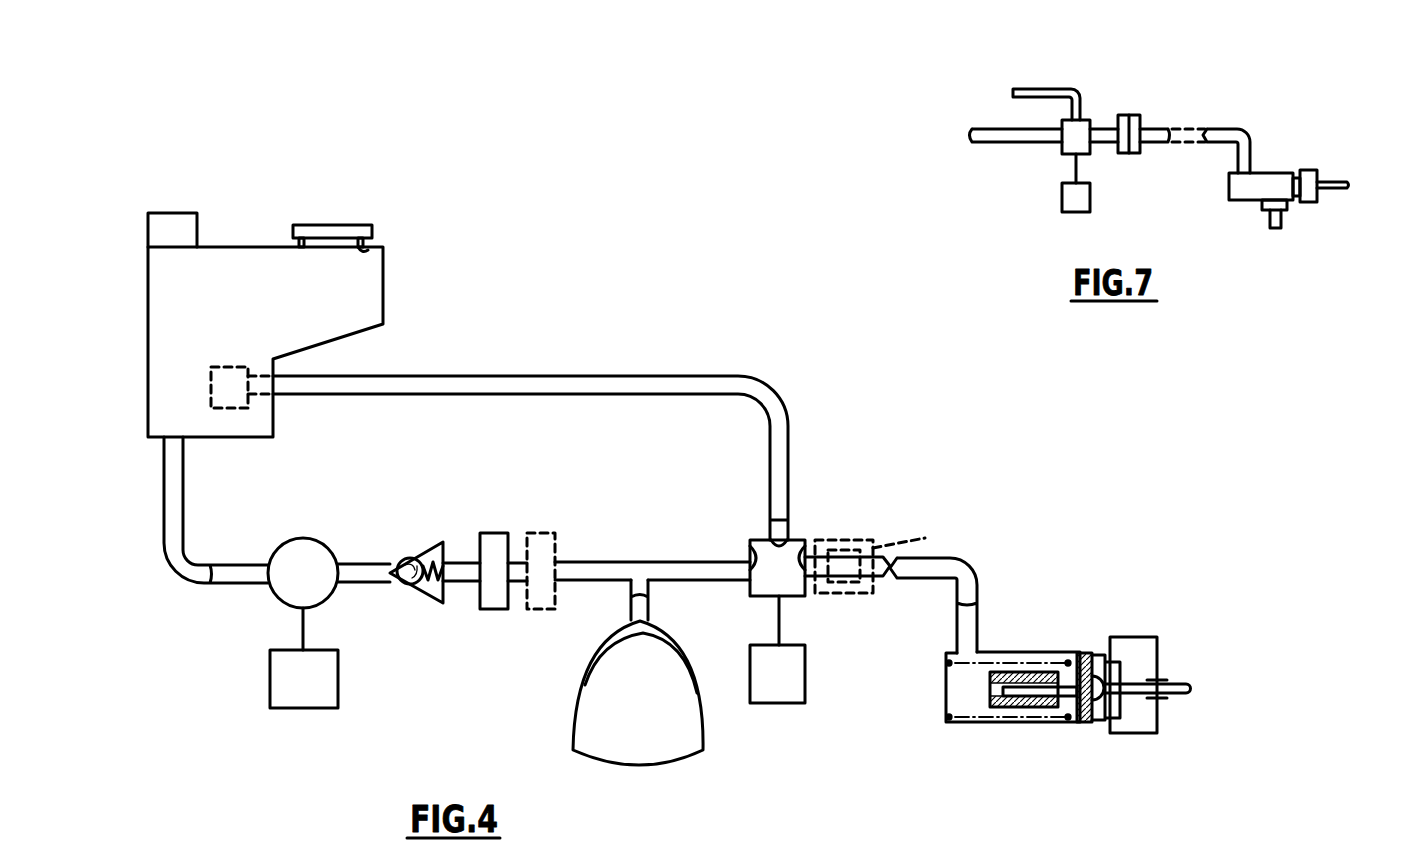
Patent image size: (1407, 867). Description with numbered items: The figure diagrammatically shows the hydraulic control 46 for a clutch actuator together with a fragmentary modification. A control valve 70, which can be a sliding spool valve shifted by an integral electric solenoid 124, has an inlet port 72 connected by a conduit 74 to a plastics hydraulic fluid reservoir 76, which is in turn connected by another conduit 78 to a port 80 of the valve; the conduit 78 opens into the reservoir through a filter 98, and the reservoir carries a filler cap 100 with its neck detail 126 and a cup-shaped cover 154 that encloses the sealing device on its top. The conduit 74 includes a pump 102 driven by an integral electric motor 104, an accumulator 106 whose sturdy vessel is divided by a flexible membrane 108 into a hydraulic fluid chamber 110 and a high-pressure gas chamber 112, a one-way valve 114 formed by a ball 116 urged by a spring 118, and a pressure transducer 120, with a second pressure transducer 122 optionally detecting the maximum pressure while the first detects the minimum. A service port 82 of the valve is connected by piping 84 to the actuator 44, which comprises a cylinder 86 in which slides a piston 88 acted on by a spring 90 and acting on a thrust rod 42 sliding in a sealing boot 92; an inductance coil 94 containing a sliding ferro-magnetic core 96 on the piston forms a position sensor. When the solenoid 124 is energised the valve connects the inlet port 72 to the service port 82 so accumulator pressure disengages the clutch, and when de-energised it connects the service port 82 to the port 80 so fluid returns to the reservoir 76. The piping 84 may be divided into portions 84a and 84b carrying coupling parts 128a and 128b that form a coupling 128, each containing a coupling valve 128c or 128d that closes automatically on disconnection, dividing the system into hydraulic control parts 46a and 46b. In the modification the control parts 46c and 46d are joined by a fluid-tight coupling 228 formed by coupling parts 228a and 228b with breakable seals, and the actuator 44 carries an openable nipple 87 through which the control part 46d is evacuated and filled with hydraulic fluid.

In FIG. 4, the thrust rod 42 is at (1180, 697).
In FIG. 7, the thrust rod 42 is at (1330, 182).
In FIG. 4, the actuator 44 is at (1030, 630).
In FIG. 7, the actuator 44 is at (1273, 146).
In FIG. 4, the hydraulic control 46 is at (818, 433).
In FIG. 7, the hydraulic control 46 is at (1160, 80).
In FIG. 4, the hydraulic control part 46a is at (683, 365).
In FIG. 4, the hydraulic control part 46b is at (935, 650).
In FIG. 7, the hydraulic control part 46c is at (1037, 113).
In FIG. 7, the hydraulic control part 46d is at (1218, 160).
In FIG. 4, the control valve 70 is at (760, 597).
In FIG. 7, the control valve 70 is at (1062, 154).
In FIG. 4, the inlet port 72 is at (755, 542).
In FIG. 4, the conduit 74 is at (592, 560).
In FIG. 7, the conduit 74 is at (998, 143).
In FIG. 4, the hydraulic fluid reservoir 76 is at (376, 292).
In FIG. 4, the conduit 78 is at (413, 375).
In FIG. 7, the conduit 78 is at (1068, 96).
In FIG. 4, the port 80 is at (790, 545).
In FIG. 4, the service port 82 is at (802, 545).
In FIG. 4, the piping 84 is at (957, 560).
In FIG. 4, the piping portion 84a is at (847, 552).
In FIG. 7, the piping portion 84a is at (1104, 127).
In FIG. 4, the piping portion 84b is at (973, 584).
In FIG. 7, the piping portion 84b is at (1168, 128).
In FIG. 4, the cylinder 86 is at (973, 725).
In FIG. 7, the cylinder 86 is at (1243, 200).
In FIG. 7, the nipple 87 is at (1272, 228).
In FIG. 4, the piston 88 is at (1080, 650).
In FIG. 4, the spring 90 is at (950, 723).
In FIG. 4, the sealing boot 92 is at (1127, 637).
In FIG. 7, the sealing boot 92 is at (1318, 170).
In FIG. 4, the electrical inductance coil 94 is at (1008, 707).
In FIG. 4, the ferro-magnetic core 96 is at (1043, 693).
In FIG. 4, the filter 98 is at (247, 366).
In FIG. 4, the filler cap 100 is at (373, 225).
In FIG. 4, the pump 102 is at (311, 546).
In FIG. 4, the electric motor 104 is at (289, 710).
In FIG. 4, the accumulator 106 is at (573, 740).
In FIG. 4, the membrane 108 is at (595, 672).
In FIG. 4, the chamber 110 is at (592, 650).
In FIG. 4, the chamber 112 is at (680, 748).
In FIG. 4, the one-way valve 114 is at (432, 540).
In FIG. 4, the ball 116 is at (411, 556).
In FIG. 4, the spring 118 is at (428, 600).
In FIG. 4, the pressure transducer 120 is at (500, 533).
In FIG. 4, the pressure transducer 122 is at (553, 533).
In FIG. 4, the solenoid 124 is at (790, 700).
In FIG. 7, the solenoid 124 is at (1062, 210).
In FIG. 4, the filler neck 126 is at (366, 255).
In FIG. 4, the coupling 128 is at (890, 540).
In FIG. 4, the coupling part 128a is at (825, 595).
In FIG. 4, the coupling part 128b is at (883, 552).
In FIG. 4, the coupling valve 128c is at (825, 585).
In FIG. 4, the coupling valve 128d is at (873, 588).
In FIG. 4, the cup-shaped cover 154 is at (197, 212).
In FIG. 7, the fluid-tight coupling 228 is at (1150, 110).
In FIG. 7, the coupling part 228a is at (1124, 153).
In FIG. 7, the coupling part 228b is at (1140, 145).